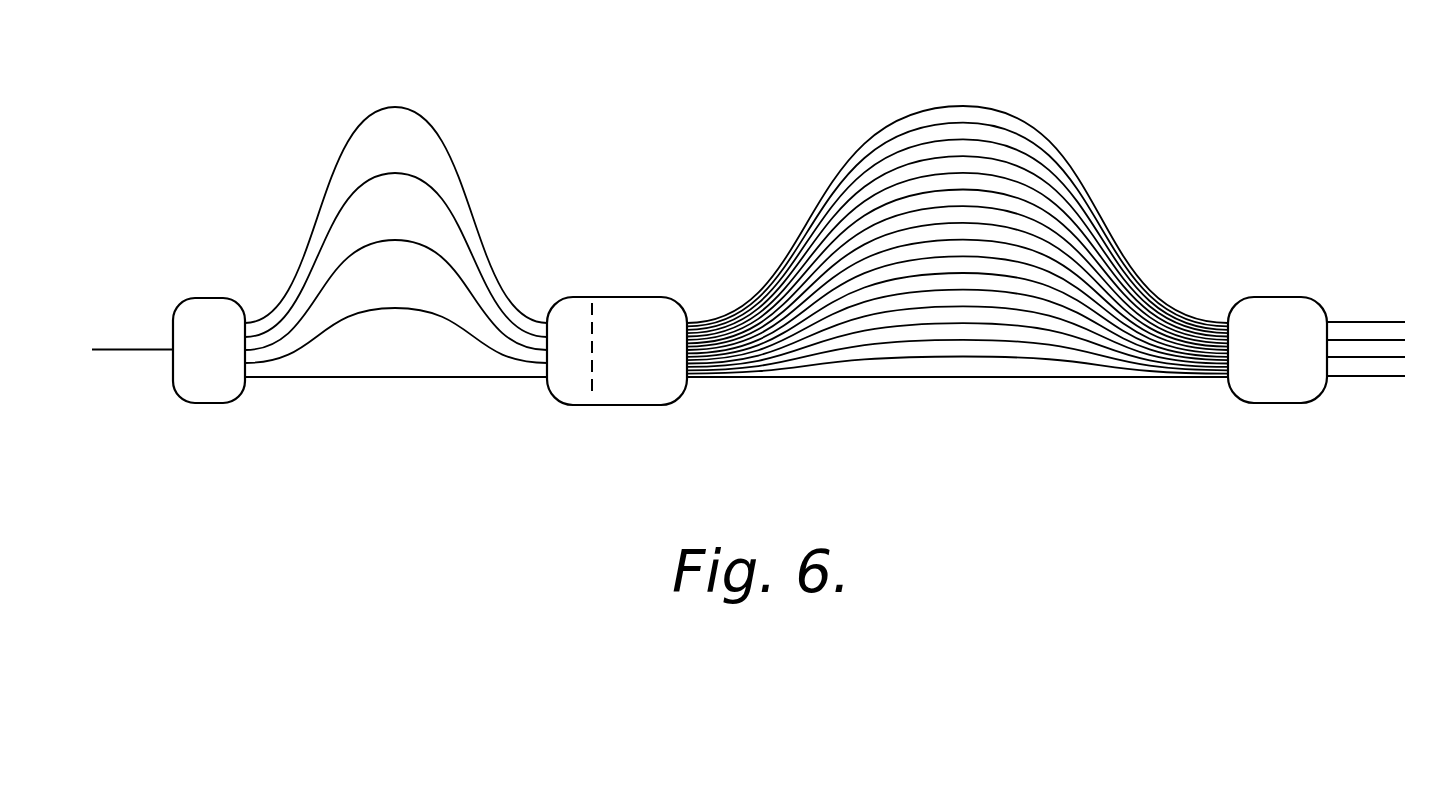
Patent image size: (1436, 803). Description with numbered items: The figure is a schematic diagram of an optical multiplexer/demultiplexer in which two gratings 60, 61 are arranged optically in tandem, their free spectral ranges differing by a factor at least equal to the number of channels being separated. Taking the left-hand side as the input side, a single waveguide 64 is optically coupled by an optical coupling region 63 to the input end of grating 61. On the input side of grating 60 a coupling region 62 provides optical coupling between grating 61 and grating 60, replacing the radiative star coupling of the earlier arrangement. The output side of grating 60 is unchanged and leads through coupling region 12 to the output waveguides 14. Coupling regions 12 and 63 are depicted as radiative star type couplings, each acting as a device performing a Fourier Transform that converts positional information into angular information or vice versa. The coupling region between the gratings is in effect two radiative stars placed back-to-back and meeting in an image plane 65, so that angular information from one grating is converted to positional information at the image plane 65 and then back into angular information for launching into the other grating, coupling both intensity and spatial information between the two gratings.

The coupling region 12 is at (1260, 333).
The output waveguides 14 is at (1375, 332).
The grating 60 is at (970, 185).
The grating 61 is at (416, 203).
The coupling region 62 is at (655, 322).
The optical coupling region 63 is at (210, 337).
The single waveguide 64 is at (148, 349).
The image plane 65 is at (593, 325).